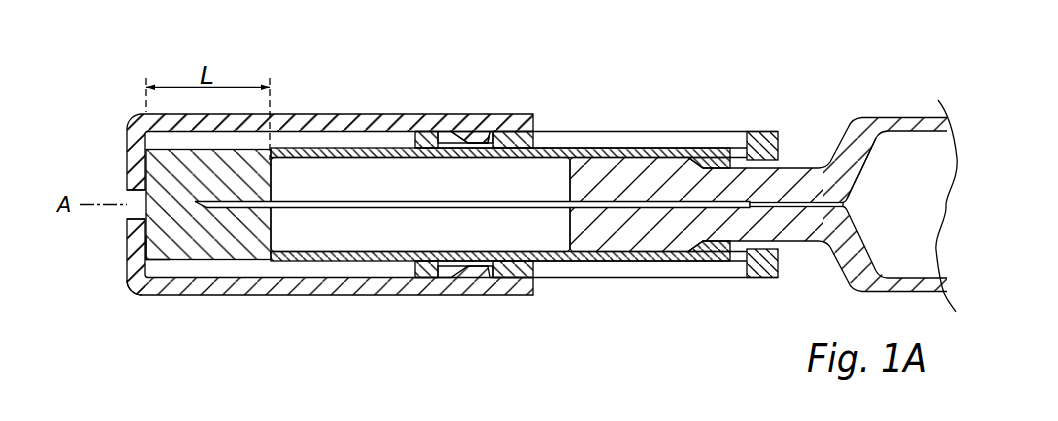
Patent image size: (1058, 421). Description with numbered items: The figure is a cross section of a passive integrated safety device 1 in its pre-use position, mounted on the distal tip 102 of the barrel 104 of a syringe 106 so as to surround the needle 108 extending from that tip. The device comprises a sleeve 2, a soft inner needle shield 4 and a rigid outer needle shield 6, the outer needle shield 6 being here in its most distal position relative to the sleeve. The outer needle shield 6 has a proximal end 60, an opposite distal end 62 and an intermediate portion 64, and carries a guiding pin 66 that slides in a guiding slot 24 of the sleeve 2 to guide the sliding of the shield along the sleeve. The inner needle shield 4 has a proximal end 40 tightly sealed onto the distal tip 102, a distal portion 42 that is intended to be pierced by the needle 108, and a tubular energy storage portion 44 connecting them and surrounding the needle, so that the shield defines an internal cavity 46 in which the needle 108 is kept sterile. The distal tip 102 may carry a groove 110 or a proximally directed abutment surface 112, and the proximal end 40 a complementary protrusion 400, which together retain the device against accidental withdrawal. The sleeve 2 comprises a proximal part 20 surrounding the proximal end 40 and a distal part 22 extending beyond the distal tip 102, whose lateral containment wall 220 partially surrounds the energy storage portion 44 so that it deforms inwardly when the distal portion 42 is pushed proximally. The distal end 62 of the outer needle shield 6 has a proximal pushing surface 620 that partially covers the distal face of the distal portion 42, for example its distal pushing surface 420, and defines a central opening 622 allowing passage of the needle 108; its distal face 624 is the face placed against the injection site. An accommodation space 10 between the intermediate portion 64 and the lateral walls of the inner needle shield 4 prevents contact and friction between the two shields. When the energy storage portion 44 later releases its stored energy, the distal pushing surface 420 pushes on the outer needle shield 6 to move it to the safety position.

The safety device 1 is at (534, 48).
The sleeve 2 is at (717, 279).
The inner needle shield 4 is at (248, 258).
The outer needle shield 6 is at (328, 120).
The accommodation space 10 is at (388, 268).
The proximal part 20 is at (737, 254).
The distal part 22 is at (423, 270).
The guiding slot 24 is at (597, 270).
The proximal end 40 is at (677, 258).
The distal portion 42 is at (190, 242).
The energy storage portion 44 is at (367, 150).
The internal cavity 46 is at (425, 190).
The proximal end 60 is at (127, 148).
The distal end 62 is at (477, 124).
The intermediate portion 64 is at (303, 120).
The guiding pin 66 is at (493, 132).
The distal tip 102 is at (645, 238).
The barrel 104 is at (917, 292).
The syringe 106 is at (893, 118).
The needle 108 is at (342, 204).
The groove 110 is at (800, 176).
The proximally directed abutment surface 112 is at (702, 168).
The lateral containment wall 220 is at (470, 236).
The protrusion 400 is at (770, 131).
The distal pushing surface 420 is at (132, 256).
The proximal pushing surface 620 is at (150, 232).
The central opening 622 is at (118, 192).
The distal face 624 is at (124, 243).